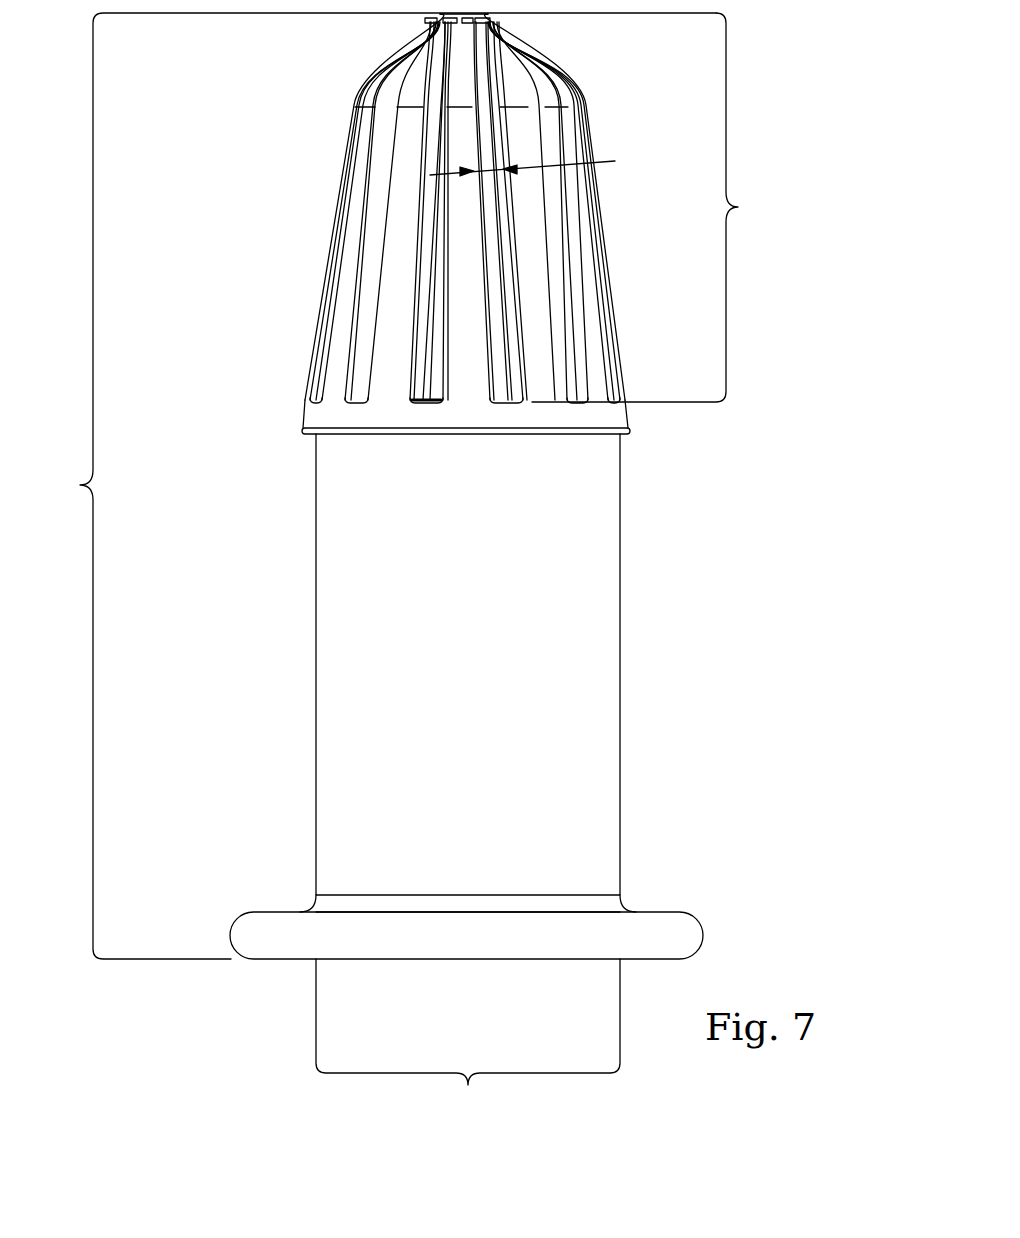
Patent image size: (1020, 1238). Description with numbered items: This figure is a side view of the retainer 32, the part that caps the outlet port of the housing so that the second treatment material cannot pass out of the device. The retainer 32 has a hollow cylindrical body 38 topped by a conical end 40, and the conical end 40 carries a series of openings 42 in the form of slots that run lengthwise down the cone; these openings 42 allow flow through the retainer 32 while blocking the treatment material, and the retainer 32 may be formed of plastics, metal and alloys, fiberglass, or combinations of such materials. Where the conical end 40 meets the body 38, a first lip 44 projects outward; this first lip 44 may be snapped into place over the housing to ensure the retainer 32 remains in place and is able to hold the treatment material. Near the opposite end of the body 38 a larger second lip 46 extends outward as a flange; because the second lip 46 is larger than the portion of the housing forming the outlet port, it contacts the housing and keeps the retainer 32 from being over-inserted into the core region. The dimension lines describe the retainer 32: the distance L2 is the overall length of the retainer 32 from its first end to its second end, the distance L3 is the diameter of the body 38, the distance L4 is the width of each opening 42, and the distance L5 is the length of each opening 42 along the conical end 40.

The retainer 32 is at (763, 368).
The hollow cylindrical body 38 is at (622, 580).
The conical end 40 is at (405, 211).
The openings 42 is at (505, 357).
The first lip 44 is at (622, 436).
The second lip 46 is at (660, 912).
The length of the retainer L2 is at (381, 486).
The diameter of the body L3 is at (468, 1043).
The width of each opening L4 is at (538, 164).
The length of each opening L5 is at (651, 207).